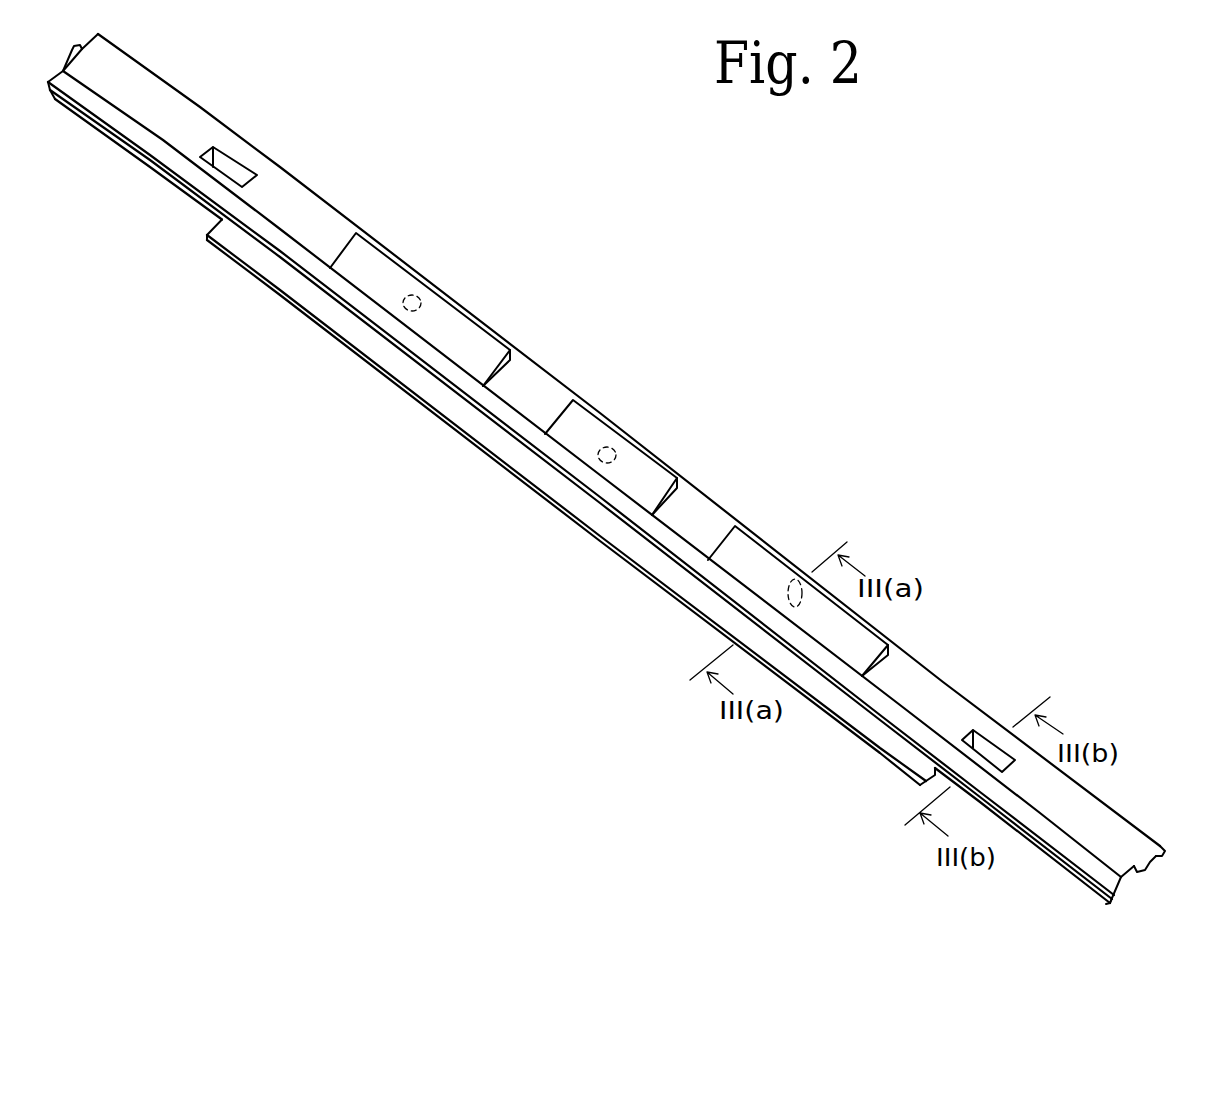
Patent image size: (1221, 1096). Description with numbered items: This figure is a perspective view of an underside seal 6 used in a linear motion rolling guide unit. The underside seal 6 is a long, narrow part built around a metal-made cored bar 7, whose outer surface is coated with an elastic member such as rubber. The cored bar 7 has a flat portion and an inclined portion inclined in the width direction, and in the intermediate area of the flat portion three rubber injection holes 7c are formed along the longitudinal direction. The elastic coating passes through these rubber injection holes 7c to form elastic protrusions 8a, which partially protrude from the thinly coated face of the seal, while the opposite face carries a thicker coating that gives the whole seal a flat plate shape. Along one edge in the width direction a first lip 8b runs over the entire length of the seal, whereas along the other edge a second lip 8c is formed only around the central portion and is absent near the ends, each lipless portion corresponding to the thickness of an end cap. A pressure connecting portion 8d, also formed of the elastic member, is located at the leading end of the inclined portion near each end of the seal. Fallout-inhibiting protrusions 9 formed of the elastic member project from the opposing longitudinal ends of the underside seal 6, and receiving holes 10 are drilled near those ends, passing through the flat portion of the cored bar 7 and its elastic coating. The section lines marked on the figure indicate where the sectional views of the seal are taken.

The underside seal 6 is at (778, 430).
The cored bar 7 is at (142, 87).
The rubber injection holes 7c is at (422, 302).
The elastic protrusions 8a is at (402, 288).
The first lip 8b is at (1164, 852).
The second lip 8c is at (657, 571).
The pressure connecting portion 8d is at (1112, 906).
The fallout-inhibiting protrusions 9 is at (77, 53).
The receiving holes 10 is at (227, 167).